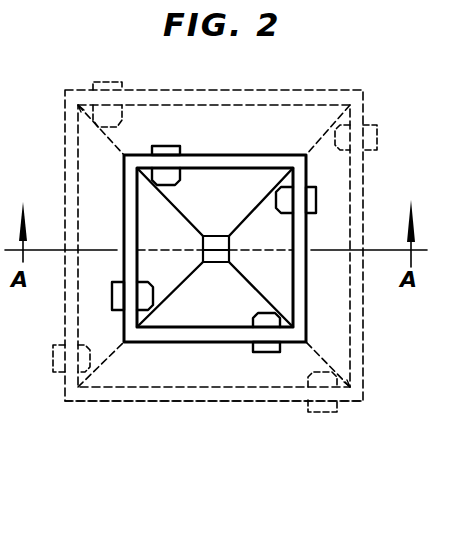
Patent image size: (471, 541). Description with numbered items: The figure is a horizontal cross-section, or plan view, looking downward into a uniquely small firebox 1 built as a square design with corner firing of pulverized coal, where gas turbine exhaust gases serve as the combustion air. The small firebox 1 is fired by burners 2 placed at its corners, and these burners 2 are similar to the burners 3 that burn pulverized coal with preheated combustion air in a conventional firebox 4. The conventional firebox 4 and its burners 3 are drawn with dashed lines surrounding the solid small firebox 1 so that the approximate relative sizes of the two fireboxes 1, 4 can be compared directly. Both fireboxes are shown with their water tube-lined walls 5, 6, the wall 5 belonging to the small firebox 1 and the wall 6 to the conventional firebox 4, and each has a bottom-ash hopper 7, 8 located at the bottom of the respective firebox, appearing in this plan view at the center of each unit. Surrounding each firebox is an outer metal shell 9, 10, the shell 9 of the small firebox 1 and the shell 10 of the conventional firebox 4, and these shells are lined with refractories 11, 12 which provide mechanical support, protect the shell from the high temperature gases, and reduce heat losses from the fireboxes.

The small firebox 1 is at (265, 133).
The burners 2 is at (170, 147).
The burners 3 is at (330, 412).
The conventional firebox 4 is at (370, 170).
The water tube-lined wall 5 is at (144, 211).
The water tube-lined wall 6 is at (78, 185).
The bottom-ash hopper 7 is at (210, 303).
The bottom-ash hopper 8 is at (145, 363).
The outer metal shell 9 is at (305, 277).
The outer metal shell 10 is at (362, 297).
The refractory lining 11 is at (230, 338).
The refractory lining 12 is at (200, 392).